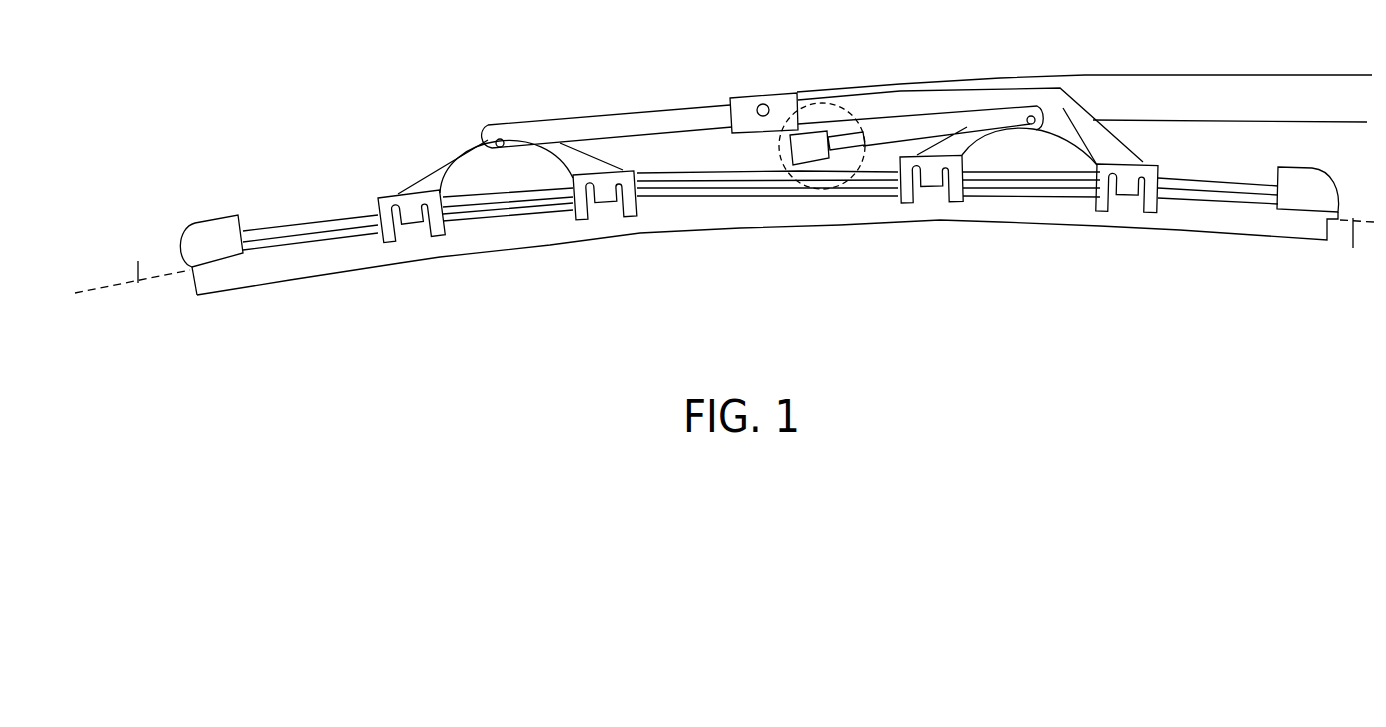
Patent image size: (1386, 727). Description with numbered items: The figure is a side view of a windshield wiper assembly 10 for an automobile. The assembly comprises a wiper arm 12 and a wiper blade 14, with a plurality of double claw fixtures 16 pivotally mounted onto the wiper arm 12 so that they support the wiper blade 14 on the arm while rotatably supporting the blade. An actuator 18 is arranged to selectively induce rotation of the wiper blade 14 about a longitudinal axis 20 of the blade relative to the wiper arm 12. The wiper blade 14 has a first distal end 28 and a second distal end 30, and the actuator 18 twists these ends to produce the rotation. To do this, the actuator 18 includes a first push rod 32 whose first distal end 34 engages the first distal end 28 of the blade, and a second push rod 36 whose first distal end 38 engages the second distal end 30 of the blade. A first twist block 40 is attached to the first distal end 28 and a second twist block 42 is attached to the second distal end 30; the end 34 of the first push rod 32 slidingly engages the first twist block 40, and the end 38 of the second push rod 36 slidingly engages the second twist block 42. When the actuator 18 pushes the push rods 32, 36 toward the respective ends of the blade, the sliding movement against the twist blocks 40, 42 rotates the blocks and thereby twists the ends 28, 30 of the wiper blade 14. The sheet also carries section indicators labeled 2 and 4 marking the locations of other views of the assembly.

The windshield wiper assembly 10 is at (519, 343).
The wiper arm 12 is at (640, 110).
The wiper blade 14 is at (233, 270).
The double claw fixtures 16 is at (379, 243).
The actuator 18 is at (877, 112).
The longitudinal axis 20 is at (136, 261).
The first distal end 28 is at (188, 283).
The second distal end 30 is at (1277, 232).
The first push rod 32 is at (494, 197).
The first distal end of the first push rod 34 is at (240, 233).
The second push rod 36 is at (1203, 180).
The first distal end of the second push rod 38 is at (1270, 186).
The first twist block 40 is at (205, 237).
The second twist block 42 is at (1300, 183).
The section line 2 is at (403, 168).
The detail circle 4 is at (858, 204).